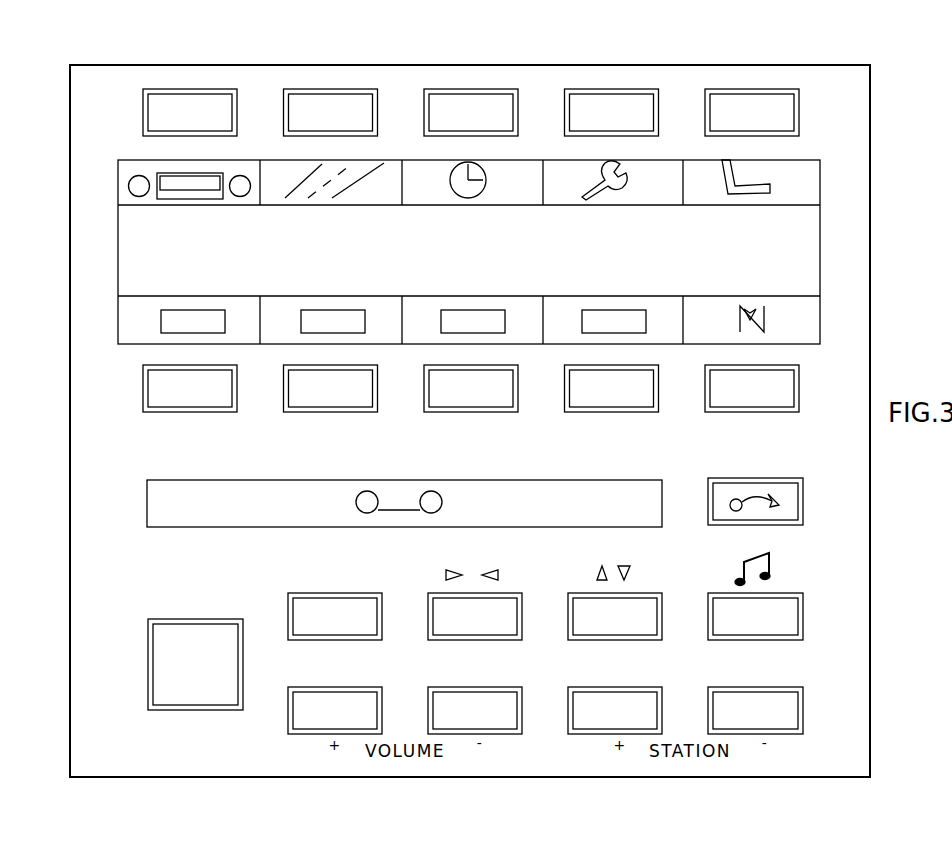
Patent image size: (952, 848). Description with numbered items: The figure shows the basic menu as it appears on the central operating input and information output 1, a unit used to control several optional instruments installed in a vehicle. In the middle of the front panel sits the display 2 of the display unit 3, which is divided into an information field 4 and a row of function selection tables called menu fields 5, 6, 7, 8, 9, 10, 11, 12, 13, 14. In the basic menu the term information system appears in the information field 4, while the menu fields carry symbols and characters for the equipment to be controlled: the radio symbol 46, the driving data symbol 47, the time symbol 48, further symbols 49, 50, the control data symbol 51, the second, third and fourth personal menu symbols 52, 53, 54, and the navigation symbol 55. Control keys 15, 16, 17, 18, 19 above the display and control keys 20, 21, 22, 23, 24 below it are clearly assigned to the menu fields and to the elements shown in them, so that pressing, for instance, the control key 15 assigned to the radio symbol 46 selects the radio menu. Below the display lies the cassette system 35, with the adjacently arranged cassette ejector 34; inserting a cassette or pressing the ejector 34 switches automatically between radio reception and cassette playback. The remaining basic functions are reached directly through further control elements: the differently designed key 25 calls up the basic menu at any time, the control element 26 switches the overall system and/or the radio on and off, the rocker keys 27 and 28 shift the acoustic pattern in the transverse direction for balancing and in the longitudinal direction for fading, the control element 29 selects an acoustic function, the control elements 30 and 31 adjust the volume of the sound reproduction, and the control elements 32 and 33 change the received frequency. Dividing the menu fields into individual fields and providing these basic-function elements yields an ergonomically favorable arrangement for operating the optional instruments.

The central operating input and information output 1 is at (386, 60).
The display 2 is at (114, 238).
The display unit 3 is at (116, 282).
The information field 4 is at (138, 286).
The menu field 5 is at (170, 188).
The menu field 6 is at (319, 181).
The menu field 7 is at (445, 177).
The menu field 8 is at (584, 176).
The menu field 9 is at (728, 177).
The menu field 10 is at (165, 329).
The menu field 11 is at (306, 328).
The menu field 12 is at (450, 328).
The menu field 13 is at (593, 328).
The menu field 14 is at (734, 323).
The control key 15 is at (203, 103).
The control key 16 is at (323, 106).
The control key 17 is at (477, 105).
The control key 18 is at (612, 103).
The control key 19 is at (746, 103).
The control key 20 is at (195, 400).
The control key 21 is at (331, 399).
The control key 22 is at (473, 399).
The control key 23 is at (607, 399).
The control key 24 is at (752, 399).
The basic menu key 25 is at (196, 694).
The on/off control element 26 is at (306, 618).
The balance rocker key 27 is at (446, 618).
The fading rocker key 28 is at (586, 616).
The acoustic function control element 29 is at (728, 616).
The volume control element 30 is at (332, 702).
The volume control element 31 is at (468, 703).
The station control element 32 is at (608, 703).
The station control element 33 is at (748, 703).
The cassette ejector 34 is at (748, 492).
The cassette system 35 is at (396, 479).
The radio symbol 46 is at (197, 200).
The driving data symbol 47 is at (298, 195).
The time symbol 48 is at (448, 192).
The wrench symbol 49 is at (610, 194).
The seat symbol 50 is at (724, 192).
The control data symbol 51 is at (190, 314).
The second personal menu symbol 52 is at (322, 313).
The third personal menu symbol 53 is at (468, 313).
The fourth personal menu symbol 54 is at (615, 313).
The navigation symbol 55 is at (753, 303).